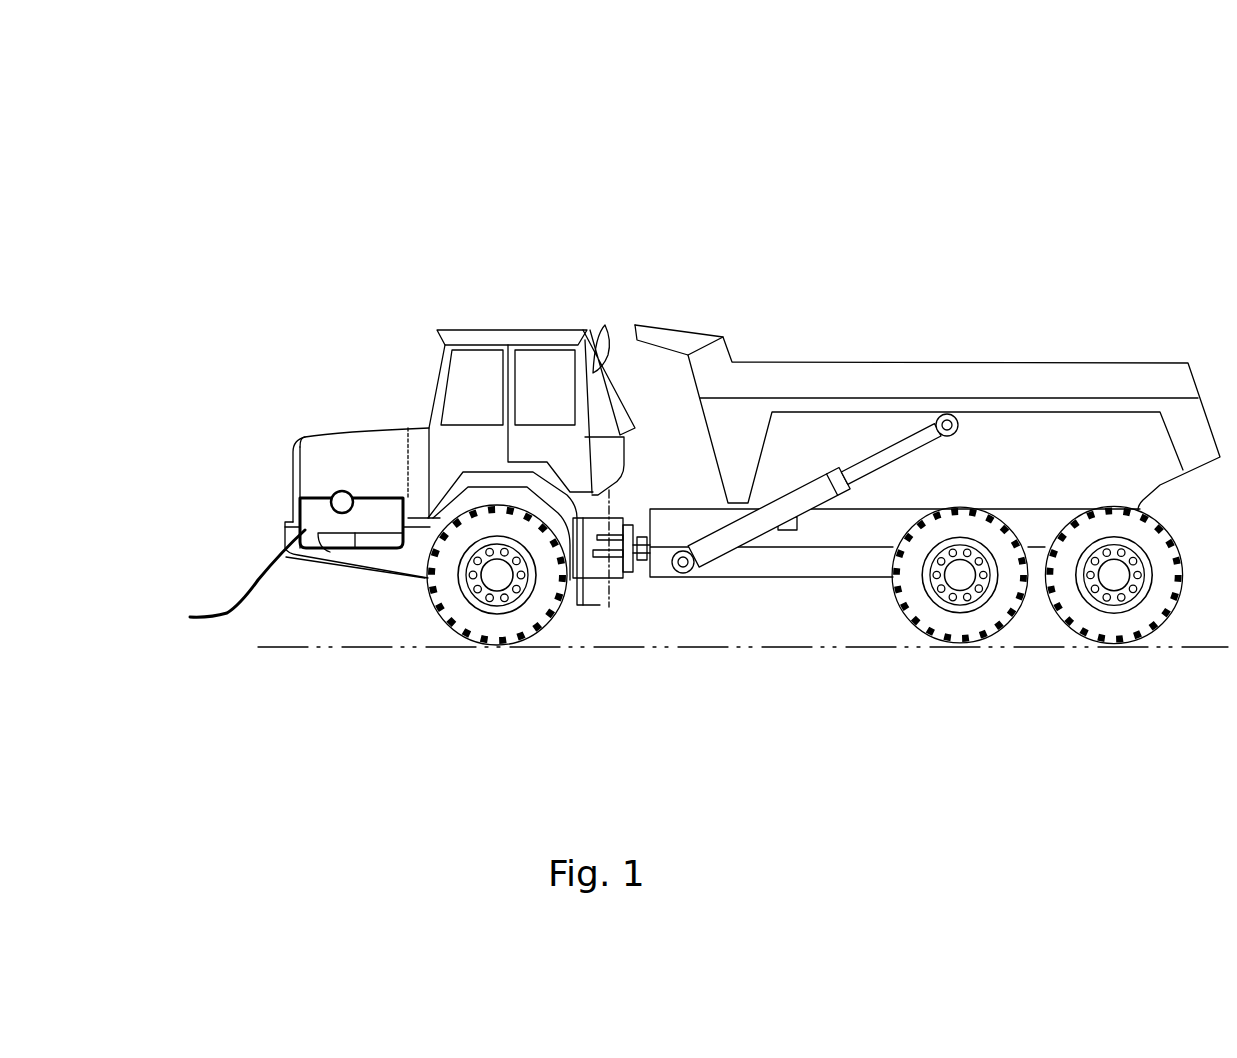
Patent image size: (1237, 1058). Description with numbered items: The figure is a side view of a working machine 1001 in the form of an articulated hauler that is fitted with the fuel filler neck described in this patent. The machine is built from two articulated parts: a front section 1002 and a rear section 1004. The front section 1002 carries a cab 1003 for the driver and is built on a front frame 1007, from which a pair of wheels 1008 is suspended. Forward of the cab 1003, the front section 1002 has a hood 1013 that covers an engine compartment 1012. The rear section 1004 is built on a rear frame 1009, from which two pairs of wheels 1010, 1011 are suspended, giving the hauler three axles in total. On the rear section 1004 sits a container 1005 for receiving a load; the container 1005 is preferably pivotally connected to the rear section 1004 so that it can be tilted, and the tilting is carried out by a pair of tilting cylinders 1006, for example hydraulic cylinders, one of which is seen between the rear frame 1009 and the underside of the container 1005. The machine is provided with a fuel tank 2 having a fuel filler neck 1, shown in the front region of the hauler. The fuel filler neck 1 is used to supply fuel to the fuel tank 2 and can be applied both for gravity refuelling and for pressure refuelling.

The working machine 1001 is at (790, 101).
The front section 1002 is at (487, 302).
The cab 1003 is at (528, 340).
The rear section 1004 is at (1033, 317).
The container 1005 is at (887, 380).
The tilting cylinders 1006 is at (780, 560).
The front frame 1007 is at (358, 567).
The wheels 1008 is at (432, 600).
The rear frame 1009 is at (747, 565).
The wheels 1010 is at (1012, 603).
The wheels 1011 is at (1160, 600).
The engine compartment 1012 is at (312, 471).
The hood 1013 is at (331, 420).
The fuel filler neck 1 is at (345, 492).
The fuel tank 2 is at (234, 580).